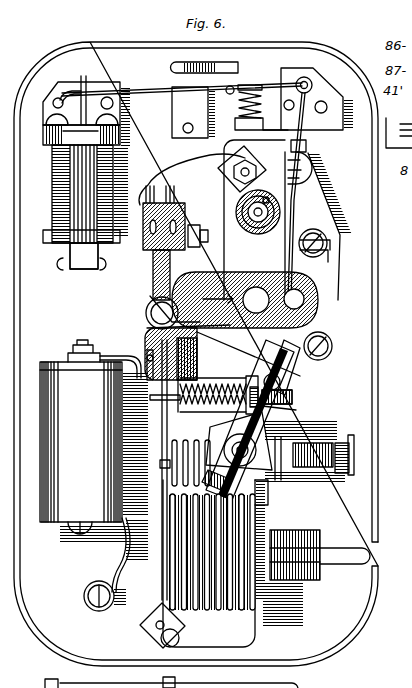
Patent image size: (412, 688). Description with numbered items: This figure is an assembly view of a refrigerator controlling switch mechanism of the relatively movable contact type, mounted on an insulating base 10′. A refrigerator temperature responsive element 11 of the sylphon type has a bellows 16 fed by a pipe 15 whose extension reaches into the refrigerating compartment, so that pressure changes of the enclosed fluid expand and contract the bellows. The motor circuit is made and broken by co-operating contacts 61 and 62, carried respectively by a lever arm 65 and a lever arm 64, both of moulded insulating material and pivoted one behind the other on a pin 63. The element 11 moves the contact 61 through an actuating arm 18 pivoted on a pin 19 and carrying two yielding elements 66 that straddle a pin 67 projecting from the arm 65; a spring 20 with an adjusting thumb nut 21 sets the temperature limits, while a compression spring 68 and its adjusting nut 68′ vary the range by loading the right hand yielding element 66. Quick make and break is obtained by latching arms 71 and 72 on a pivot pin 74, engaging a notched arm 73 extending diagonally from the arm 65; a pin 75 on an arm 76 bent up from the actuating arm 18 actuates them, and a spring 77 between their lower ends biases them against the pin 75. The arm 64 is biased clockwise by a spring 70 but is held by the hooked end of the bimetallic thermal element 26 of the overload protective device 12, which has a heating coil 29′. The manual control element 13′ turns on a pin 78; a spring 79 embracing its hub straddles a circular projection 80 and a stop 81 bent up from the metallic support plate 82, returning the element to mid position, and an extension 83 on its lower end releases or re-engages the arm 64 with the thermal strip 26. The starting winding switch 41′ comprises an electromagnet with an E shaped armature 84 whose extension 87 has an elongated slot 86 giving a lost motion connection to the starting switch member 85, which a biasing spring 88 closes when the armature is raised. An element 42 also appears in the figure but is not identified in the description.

The base 10′ is at (360, 520).
The refrigerator temperature responsive element 11 is at (285, 530).
The electroresponsive overload protective device 12 is at (295, 204).
The manual control element 13′ is at (312, 262).
The pipe 15 is at (340, 566).
The sylphon bellows 16 is at (230, 605).
The actuating arm 18 is at (156, 596).
The pin 19 is at (160, 640).
The spring 20 is at (284, 462).
The adjusting thumb nut 21 is at (349, 435).
The bimetallic thermal responsive element 26 is at (294, 222).
The heating coil 29′ is at (291, 187).
The starting winding switch 41′ is at (52, 192).
The battery 42 is at (94, 466).
The contact 61 is at (168, 185).
The contact 62 is at (178, 200).
The pin 63 is at (148, 310).
The lever arm 64 is at (220, 298).
The lever arm 65 is at (144, 330).
The yielding elements 66 is at (178, 416).
The pin 67 is at (147, 340).
The adjustable compression spring 68 is at (228, 418).
The adjusting nut 68′ is at (280, 414).
The spring 70 is at (155, 296).
The latching arm 71 is at (290, 370).
The latching arm 72 is at (281, 384).
The notched arm 73 is at (300, 356).
The pivot pin 74 is at (245, 448).
The pin 75 is at (294, 398).
The arm 76 is at (254, 385).
The spring 77 is at (268, 494).
The pin 78 is at (255, 211).
The spring 79 is at (238, 220).
The circular projection 80 is at (330, 260).
The stop 81 is at (258, 255).
The metallic support plate 82 is at (307, 145).
The circular projection 83 is at (278, 336).
The movable armature 84 is at (70, 250).
The starting switch member 85 is at (162, 88).
The elongated slot 86 is at (90, 88).
The extension 87 is at (66, 93).
The biasing spring 88 is at (258, 122).